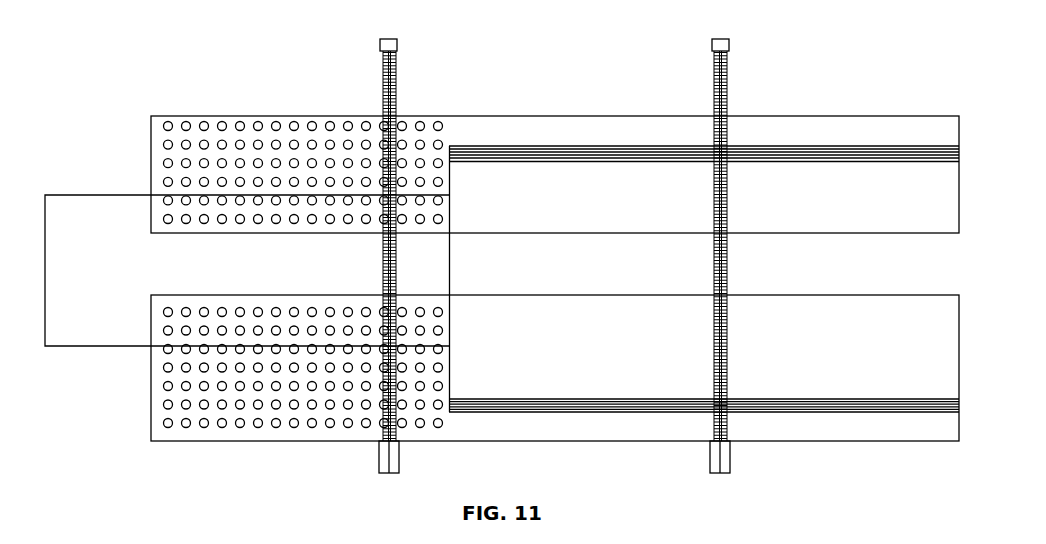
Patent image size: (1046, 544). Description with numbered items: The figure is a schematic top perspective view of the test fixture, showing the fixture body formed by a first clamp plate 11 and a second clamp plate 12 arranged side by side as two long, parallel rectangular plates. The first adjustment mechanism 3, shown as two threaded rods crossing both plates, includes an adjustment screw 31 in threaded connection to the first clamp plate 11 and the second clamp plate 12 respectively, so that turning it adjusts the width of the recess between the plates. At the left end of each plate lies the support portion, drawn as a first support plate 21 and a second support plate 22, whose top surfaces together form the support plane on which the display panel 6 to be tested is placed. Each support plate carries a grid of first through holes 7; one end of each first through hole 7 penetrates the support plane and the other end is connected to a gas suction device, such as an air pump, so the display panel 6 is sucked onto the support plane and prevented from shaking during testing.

The first adjustment mechanism 3 is at (554, 256).
The adjustment screw 31 is at (716, 42).
The display panel 6 is at (104, 205).
The first through hole 7 is at (187, 125).
The first clamp plate 11 is at (855, 125).
The second clamp plate 12 is at (849, 432).
The first support plate 21 is at (266, 122).
The second support plate 22 is at (232, 435).